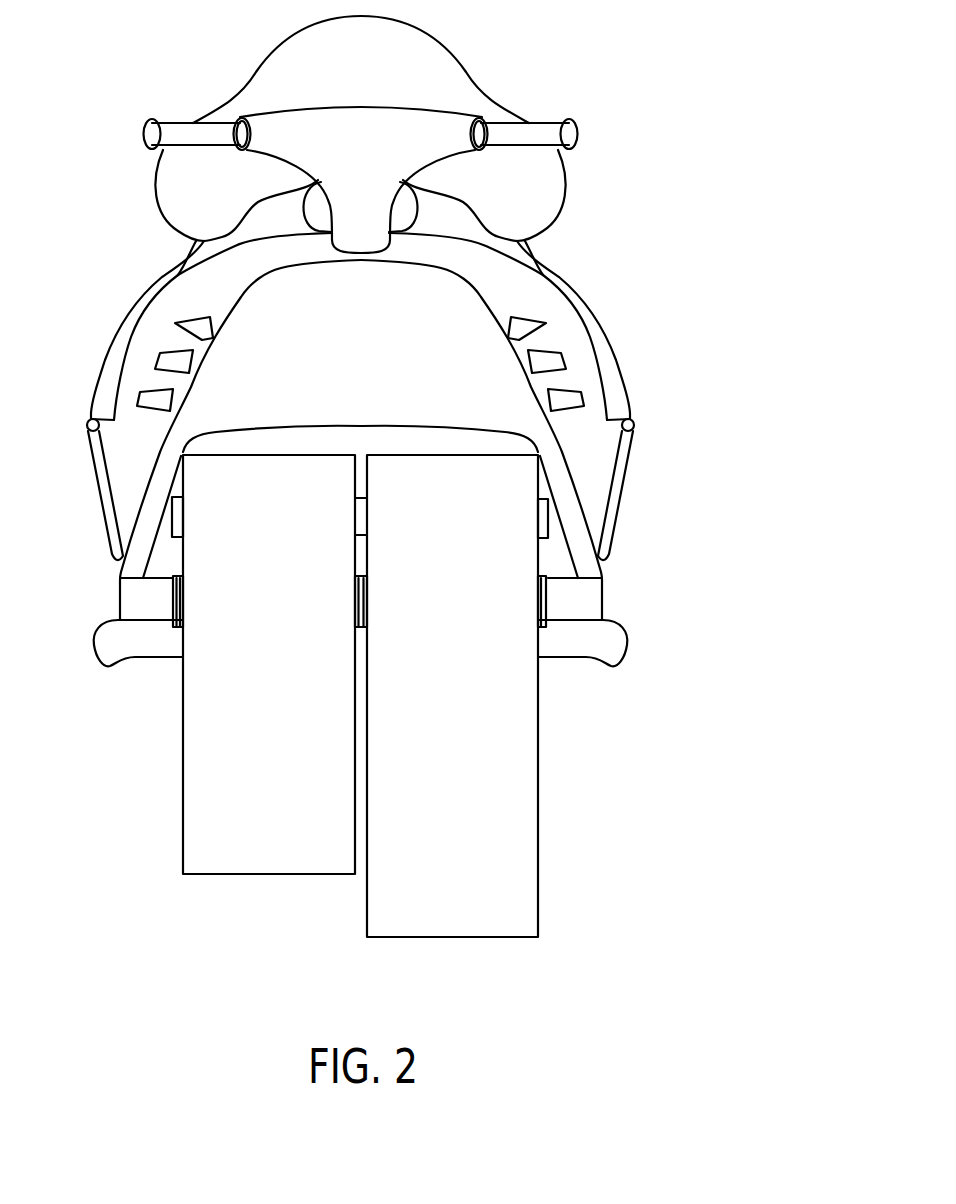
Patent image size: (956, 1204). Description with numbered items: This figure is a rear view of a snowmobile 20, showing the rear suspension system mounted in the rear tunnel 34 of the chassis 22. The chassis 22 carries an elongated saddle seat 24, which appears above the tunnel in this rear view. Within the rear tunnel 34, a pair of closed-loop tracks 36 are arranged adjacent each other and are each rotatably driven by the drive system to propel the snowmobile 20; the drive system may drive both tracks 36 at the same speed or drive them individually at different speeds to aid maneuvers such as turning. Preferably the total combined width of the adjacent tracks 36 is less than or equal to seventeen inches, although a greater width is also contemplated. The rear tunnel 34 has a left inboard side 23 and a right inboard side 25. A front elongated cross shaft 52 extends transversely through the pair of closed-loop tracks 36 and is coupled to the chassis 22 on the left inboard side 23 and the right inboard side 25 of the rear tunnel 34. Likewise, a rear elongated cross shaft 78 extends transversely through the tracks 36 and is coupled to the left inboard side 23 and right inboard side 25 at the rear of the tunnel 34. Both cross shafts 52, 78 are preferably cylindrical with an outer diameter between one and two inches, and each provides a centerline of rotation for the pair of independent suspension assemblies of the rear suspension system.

The snowmobile 20 is at (527, 46).
The chassis 22 is at (162, 273).
The elongated saddle seat 24 is at (235, 358).
The left inboard side 23 is at (155, 543).
The right inboard side 25 is at (571, 548).
The rear tunnel 34 is at (473, 432).
The closed-loop tracks 36 is at (207, 752).
The rear elongated cross shaft 78 is at (178, 517).
The front elongated cross shaft 52 is at (177, 602).